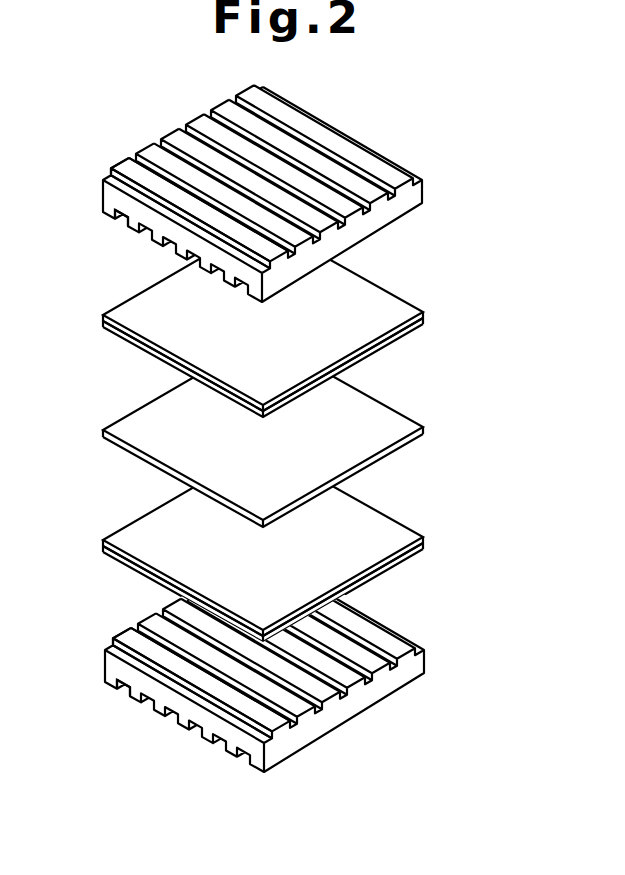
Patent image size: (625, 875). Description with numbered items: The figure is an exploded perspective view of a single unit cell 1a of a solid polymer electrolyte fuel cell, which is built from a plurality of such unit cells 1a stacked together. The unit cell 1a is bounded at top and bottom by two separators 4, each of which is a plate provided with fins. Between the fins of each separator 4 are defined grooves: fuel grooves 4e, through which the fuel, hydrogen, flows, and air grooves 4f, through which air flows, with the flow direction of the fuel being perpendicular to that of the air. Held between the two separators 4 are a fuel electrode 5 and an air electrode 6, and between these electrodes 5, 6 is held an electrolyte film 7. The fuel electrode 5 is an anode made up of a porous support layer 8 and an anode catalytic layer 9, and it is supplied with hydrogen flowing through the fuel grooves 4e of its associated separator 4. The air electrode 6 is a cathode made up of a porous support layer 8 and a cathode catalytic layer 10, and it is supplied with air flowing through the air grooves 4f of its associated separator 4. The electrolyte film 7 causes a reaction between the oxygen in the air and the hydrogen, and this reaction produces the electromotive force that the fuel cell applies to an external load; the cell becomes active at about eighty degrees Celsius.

The unit cell 1a is at (536, 188).
The separator 4 is at (261, 425).
The fuel groove 4e is at (122, 219).
The air groove 4f is at (125, 177).
The fuel electrode 5 is at (311, 319).
The air electrode 6 is at (314, 544).
The electrolyte film 7 is at (397, 422).
The porous support layer 8 is at (402, 303).
The anode catalytic layer 9 is at (410, 333).
The cathode catalytic layer 10 is at (403, 527).